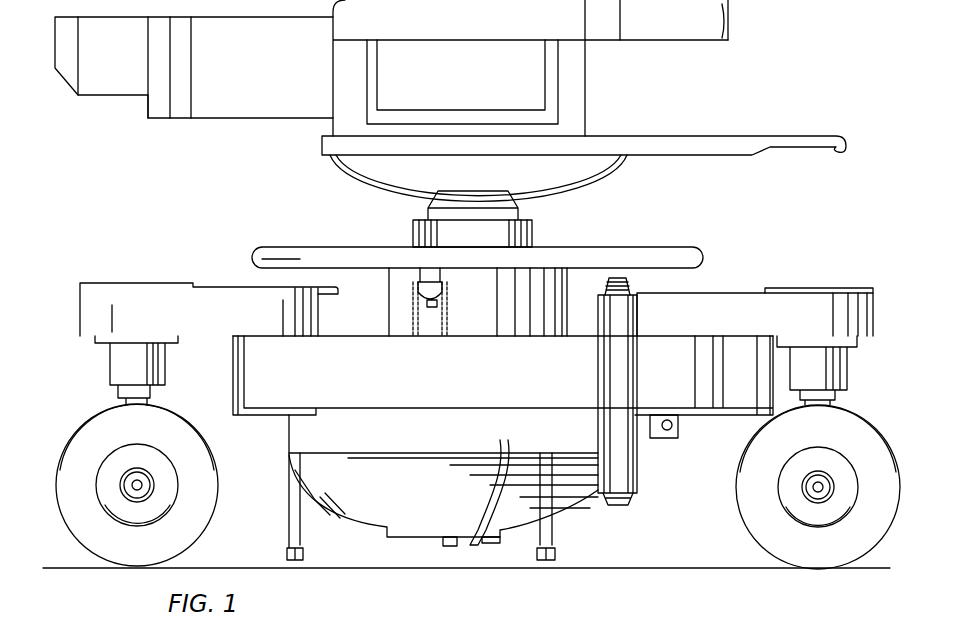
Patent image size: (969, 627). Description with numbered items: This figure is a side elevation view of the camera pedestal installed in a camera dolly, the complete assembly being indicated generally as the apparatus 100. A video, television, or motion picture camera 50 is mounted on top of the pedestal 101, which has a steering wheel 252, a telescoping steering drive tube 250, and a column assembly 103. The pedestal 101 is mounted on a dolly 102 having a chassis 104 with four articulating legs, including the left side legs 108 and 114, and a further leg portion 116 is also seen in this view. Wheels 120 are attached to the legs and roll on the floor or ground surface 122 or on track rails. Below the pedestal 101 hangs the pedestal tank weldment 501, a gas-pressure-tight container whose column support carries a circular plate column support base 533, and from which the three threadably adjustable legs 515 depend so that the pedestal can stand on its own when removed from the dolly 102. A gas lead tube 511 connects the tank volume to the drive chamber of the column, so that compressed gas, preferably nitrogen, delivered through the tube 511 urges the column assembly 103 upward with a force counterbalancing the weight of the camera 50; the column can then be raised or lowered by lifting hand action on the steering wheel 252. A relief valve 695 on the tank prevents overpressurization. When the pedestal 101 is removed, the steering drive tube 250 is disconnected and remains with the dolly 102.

The camera 50 is at (582, 98).
The mobile base assembly 100 is at (760, 252).
The pedestal 101 is at (372, 225).
The dolly 102 is at (862, 280).
The column assembly 103 is at (400, 290).
The chassis 104 is at (657, 388).
The left side leg 108 is at (95, 296).
The left side leg 114 is at (810, 298).
The wheel fork 116 is at (860, 352).
The wheels 120 is at (95, 420).
The ground surface 122 is at (252, 535).
The telescoping steering drive tube 250 is at (633, 478).
The steering wheel 252 is at (678, 268).
The pedestal tank weldment 501 is at (370, 510).
The gas lead tube 511 is at (500, 492).
The legs 515 is at (289, 505).
The column support base 533 is at (455, 528).
The relief valve 695 is at (300, 490).